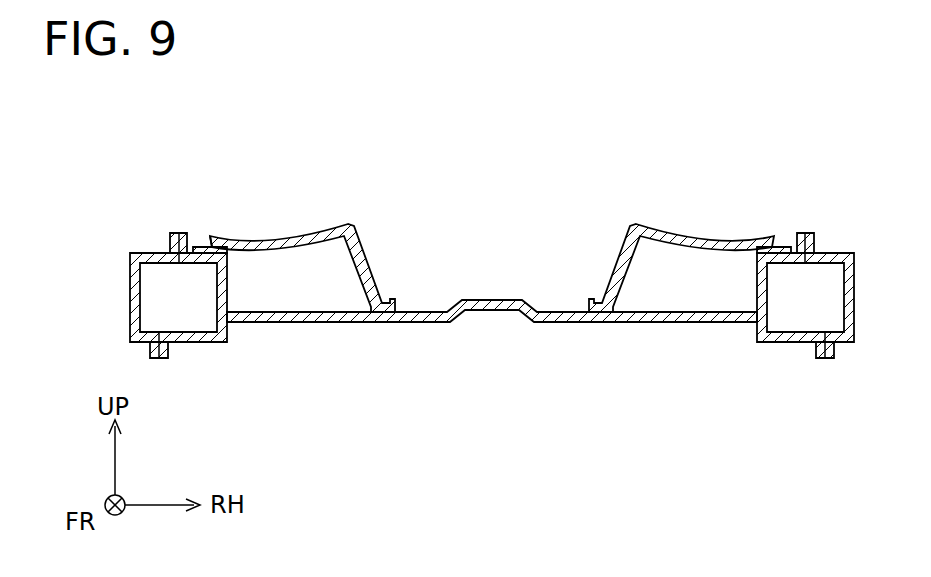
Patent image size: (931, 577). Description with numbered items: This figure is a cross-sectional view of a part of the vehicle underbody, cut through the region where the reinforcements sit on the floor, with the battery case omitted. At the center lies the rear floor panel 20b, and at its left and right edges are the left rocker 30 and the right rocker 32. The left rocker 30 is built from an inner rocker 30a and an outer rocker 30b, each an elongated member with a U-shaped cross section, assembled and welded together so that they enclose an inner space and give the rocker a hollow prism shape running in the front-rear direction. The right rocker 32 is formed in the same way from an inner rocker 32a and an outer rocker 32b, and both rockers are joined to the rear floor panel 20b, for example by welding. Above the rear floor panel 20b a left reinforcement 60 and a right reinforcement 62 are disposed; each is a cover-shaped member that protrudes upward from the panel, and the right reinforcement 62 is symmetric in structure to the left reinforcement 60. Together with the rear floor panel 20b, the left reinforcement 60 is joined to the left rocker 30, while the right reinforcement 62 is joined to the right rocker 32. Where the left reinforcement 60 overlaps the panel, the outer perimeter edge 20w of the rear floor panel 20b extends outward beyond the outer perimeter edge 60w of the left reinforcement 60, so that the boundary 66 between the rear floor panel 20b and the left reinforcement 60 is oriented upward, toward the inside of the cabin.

The rear floor panel 20b is at (493, 305).
The outer perimeter edge of the rear floor panel 20w is at (178, 263).
The left rocker 30 is at (158, 270).
The inner rocker 30a is at (192, 252).
The outer rocker 30b is at (153, 253).
The right rocker 32 is at (811, 241).
The inner rocker 32a is at (784, 216).
The outer rocker 32b is at (823, 252).
The left reinforcement 60 is at (302, 218).
The outer perimeter edge of the left reinforcement 60w is at (212, 243).
The right reinforcement 62 is at (664, 232).
The boundary 66 is at (195, 247).